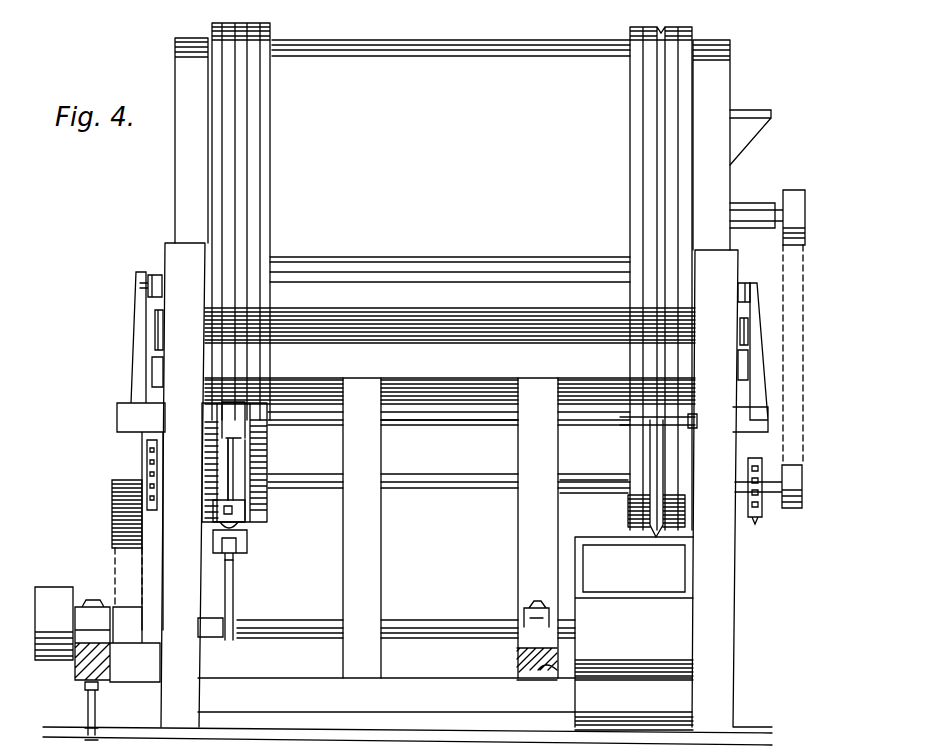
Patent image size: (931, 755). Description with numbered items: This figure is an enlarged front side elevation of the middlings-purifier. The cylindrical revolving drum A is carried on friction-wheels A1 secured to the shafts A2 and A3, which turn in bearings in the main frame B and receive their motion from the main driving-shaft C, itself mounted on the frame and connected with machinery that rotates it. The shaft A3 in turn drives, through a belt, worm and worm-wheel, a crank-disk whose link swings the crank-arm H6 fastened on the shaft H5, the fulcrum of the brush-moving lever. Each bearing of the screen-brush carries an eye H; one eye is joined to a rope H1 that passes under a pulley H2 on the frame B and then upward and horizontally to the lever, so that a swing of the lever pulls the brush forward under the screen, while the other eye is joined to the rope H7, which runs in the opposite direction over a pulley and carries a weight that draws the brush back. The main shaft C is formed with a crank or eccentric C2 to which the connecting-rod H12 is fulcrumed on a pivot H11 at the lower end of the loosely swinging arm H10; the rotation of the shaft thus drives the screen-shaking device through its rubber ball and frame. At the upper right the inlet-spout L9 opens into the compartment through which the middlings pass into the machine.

The revolving drum A is at (470, 56).
The friction-wheels A1 is at (257, 464).
The shaft A2 is at (485, 484).
The shaft A3 is at (474, 421).
The main frame B is at (692, 670).
The main driving-shaft C is at (313, 607).
The crank or eccentric C2 is at (235, 640).
The eye H is at (157, 322).
The rope H1 is at (152, 276).
The pulley H2 is at (137, 347).
The shaft H5 is at (215, 413).
The crank-arm H6 is at (246, 516).
The rope H7 is at (221, 522).
The plunger rod H10 is at (229, 452).
The clevis H11 is at (247, 545).
The connecting rod H12 is at (231, 598).
The inlet-spout L9 is at (773, 97).